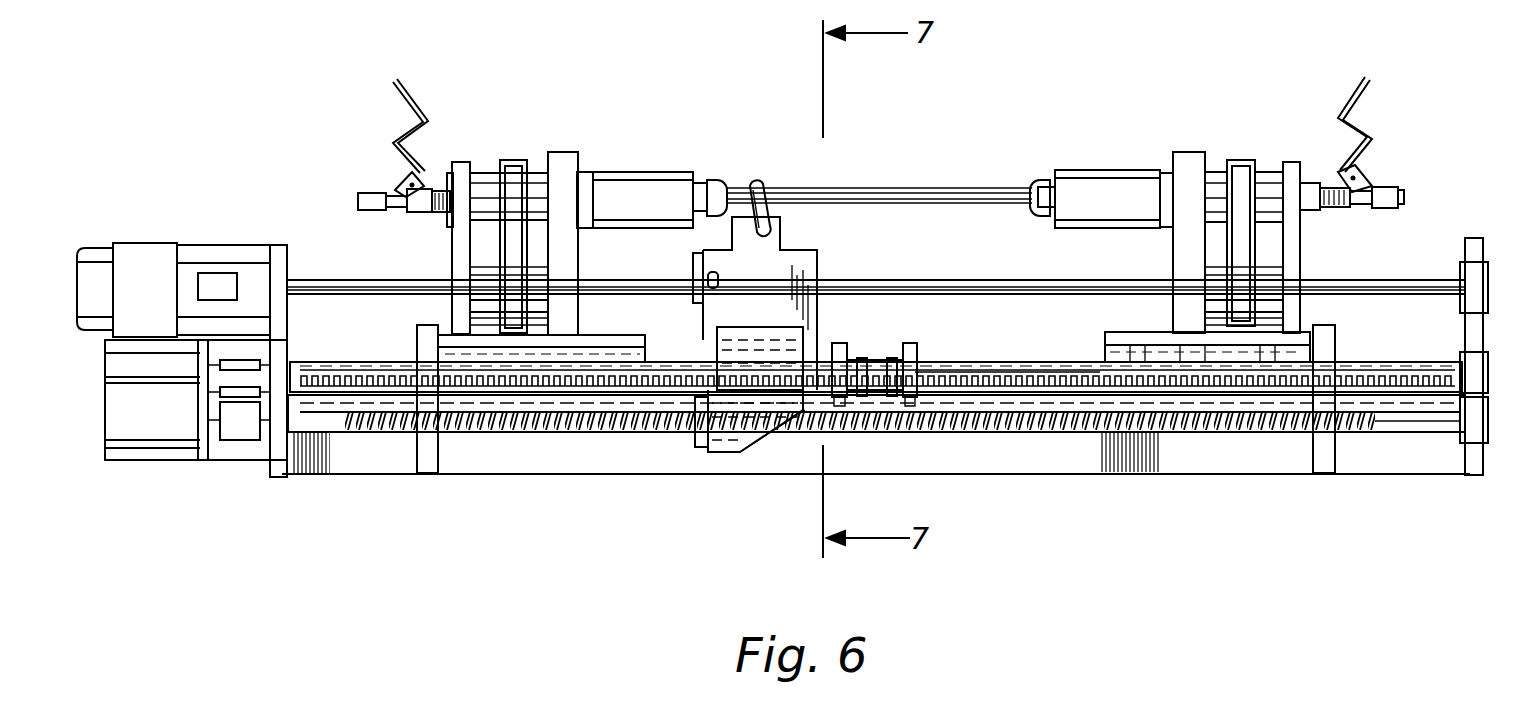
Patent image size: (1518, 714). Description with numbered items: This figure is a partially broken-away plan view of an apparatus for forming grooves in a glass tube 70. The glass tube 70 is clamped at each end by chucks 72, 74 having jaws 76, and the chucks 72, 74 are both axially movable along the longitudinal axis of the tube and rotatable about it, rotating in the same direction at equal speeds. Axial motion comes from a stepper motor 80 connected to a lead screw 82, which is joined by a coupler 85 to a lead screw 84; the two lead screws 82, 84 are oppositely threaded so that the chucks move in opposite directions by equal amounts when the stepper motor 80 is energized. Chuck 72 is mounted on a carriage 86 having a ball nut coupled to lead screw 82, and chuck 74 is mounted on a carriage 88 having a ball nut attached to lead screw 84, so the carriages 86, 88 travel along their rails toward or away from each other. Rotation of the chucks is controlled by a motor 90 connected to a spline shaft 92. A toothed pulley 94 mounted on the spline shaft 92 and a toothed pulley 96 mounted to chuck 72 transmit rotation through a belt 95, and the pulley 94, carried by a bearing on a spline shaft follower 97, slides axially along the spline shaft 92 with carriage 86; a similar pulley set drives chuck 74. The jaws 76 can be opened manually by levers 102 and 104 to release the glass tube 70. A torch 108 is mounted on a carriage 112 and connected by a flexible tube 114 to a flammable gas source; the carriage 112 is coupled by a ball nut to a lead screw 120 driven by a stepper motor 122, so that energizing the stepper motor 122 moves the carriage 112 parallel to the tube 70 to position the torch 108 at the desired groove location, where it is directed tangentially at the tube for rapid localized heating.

The glass tube 70 is at (925, 186).
The chuck 72 is at (637, 172).
The chuck 74 is at (1100, 170).
The jaws 76 is at (710, 182).
The stepper motor 80 is at (146, 337).
The lead screw 82 is at (403, 360).
The lead screw 84 is at (937, 370).
The coupler 85 is at (873, 363).
The carriage 86 is at (613, 333).
The carriage 88 is at (1127, 330).
The motor 90 is at (95, 257).
The spline shaft 92 is at (1383, 277).
The toothed pulley 94 is at (497, 255).
The belt 95 is at (513, 162).
The toothed pulley 96 is at (500, 170).
The spline shaft follower 97 is at (478, 280).
The lever 102 is at (403, 78).
The lever 104 is at (1360, 80).
The torch 108 is at (760, 185).
The carriage 112 is at (815, 265).
The flexible tube 114 is at (777, 218).
The lead screw 120 is at (578, 432).
The stepper motor 122 is at (165, 460).